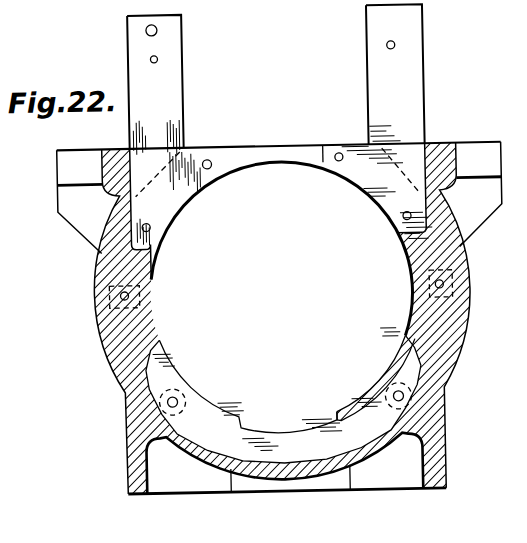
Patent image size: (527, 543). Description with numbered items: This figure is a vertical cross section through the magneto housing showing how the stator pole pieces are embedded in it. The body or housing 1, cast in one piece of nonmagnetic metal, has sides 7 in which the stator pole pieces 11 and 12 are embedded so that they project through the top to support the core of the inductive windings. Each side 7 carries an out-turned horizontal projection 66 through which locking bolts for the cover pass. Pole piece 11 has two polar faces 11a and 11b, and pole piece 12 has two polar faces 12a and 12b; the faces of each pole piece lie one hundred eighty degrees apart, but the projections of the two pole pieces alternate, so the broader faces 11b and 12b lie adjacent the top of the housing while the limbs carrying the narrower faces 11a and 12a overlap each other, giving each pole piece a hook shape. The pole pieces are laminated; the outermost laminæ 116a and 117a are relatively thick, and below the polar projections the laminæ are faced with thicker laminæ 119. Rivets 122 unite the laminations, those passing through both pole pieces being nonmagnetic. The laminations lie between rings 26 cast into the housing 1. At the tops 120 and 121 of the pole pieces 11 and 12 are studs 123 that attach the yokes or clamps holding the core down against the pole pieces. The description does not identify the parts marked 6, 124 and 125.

The body or housing 1 is at (438, 429).
The bottom wall of body 6 is at (297, 462).
The sides of the housing 7 is at (100, 304).
The stator pole piece 11 is at (136, 82).
The polar face 11a is at (376, 365).
The polar face 11b is at (223, 194).
The stator pole piece 12 is at (409, 74).
The polar face 12a is at (232, 389).
The polar face 12b is at (384, 229).
The rings 26 is at (262, 152).
The out-turned horizontal projections 66 is at (70, 150).
The outermost laminæ 116a is at (436, 356).
The outermost laminæ 117a is at (161, 181).
The thicker laminæ 119 is at (130, 290).
The top of pole piece 120 is at (172, 104).
The top of pole piece 121 is at (387, 166).
The rivets 122 is at (392, 51).
The projection pins or studs 123 is at (162, 29).
The pivot pin 124 is at (174, 396).
The pin 125 is at (444, 286).